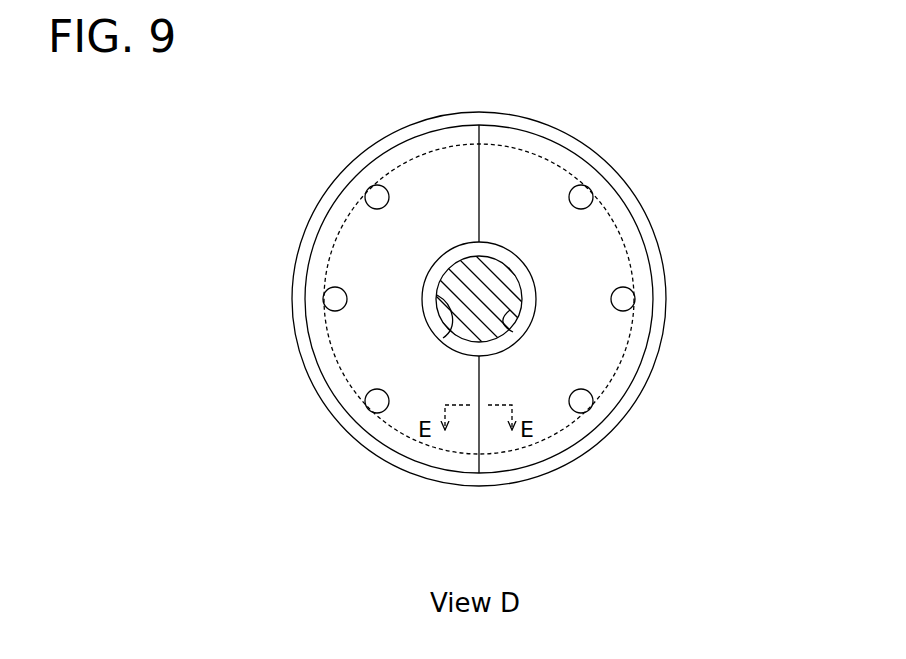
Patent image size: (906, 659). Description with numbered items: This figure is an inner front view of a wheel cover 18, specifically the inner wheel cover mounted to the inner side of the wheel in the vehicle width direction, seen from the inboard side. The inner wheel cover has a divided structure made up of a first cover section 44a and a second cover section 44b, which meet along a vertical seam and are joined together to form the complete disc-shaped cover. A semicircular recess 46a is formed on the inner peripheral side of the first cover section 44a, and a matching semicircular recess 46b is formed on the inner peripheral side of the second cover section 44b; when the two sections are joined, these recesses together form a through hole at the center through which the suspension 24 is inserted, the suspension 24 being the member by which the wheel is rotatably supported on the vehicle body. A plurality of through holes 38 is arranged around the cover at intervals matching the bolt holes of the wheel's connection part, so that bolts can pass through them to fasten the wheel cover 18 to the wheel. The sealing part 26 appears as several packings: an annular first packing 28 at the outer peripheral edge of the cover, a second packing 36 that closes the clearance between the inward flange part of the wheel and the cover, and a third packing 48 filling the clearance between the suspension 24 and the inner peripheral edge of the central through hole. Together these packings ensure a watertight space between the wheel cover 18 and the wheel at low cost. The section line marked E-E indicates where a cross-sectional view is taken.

The wheel cover 18 is at (392, 112).
The first packing 28 is at (307, 219).
The first cover section 44a is at (353, 255).
The second cover section 44b is at (590, 238).
The second packing 36 is at (632, 258).
The through holes 38 is at (580, 197).
The third packing 48 is at (497, 360).
The sealing part 26 is at (445, 357).
The suspension 24 is at (510, 345).
The semicircular recess 46a is at (437, 337).
The semicircular recess 46b is at (510, 325).